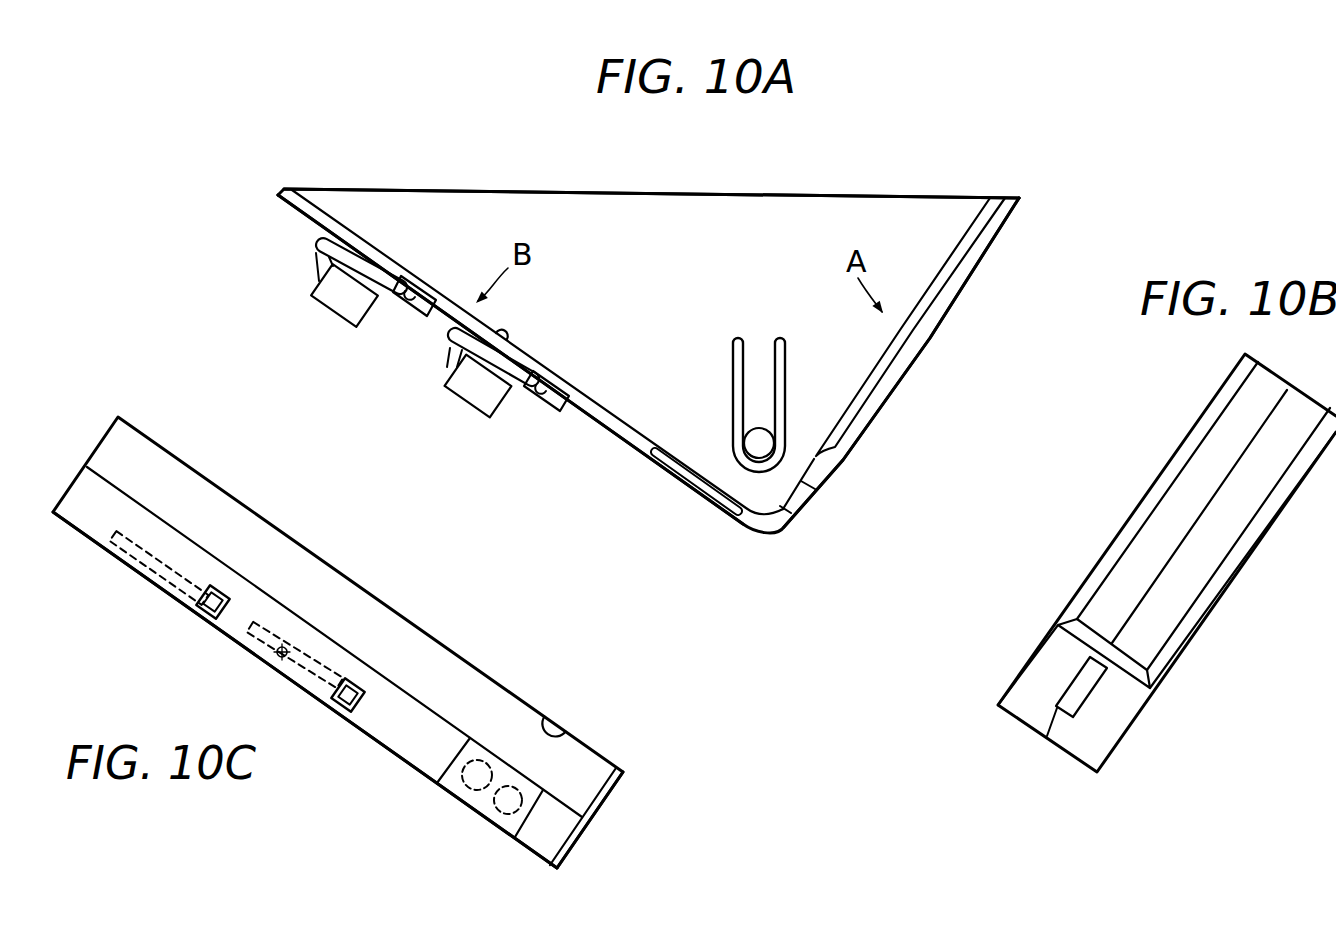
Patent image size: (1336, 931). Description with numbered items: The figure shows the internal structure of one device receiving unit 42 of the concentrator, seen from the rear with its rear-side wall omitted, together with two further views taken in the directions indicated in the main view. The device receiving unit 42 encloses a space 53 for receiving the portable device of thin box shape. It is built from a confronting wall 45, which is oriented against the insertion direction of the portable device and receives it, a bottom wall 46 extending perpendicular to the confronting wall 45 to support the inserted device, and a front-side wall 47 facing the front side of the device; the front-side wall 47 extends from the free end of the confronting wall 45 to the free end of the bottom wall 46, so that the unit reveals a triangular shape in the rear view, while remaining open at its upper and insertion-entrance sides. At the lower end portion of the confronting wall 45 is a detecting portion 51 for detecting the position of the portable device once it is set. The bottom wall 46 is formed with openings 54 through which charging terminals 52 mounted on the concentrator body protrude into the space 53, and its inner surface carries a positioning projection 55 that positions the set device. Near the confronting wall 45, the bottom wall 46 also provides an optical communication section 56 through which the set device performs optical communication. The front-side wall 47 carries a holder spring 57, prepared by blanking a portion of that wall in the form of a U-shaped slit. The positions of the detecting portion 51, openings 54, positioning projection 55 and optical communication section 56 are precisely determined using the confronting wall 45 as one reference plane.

In FIG. 10A, the device receiving unit 42 is at (855, 192).
In FIG. 10B, the device receiving unit 42 is at (1167, 450).
In FIG. 10C, the device receiving unit 42 is at (320, 556).
In FIG. 10A, the confronting wall 45 is at (942, 302).
In FIG. 10B, the confronting wall 45 is at (1197, 583).
In FIG. 10C, the confronting wall 45 is at (603, 797).
In FIG. 10A, the bottom wall 46 is at (305, 212).
In FIG. 10C, the bottom wall 46 is at (417, 763).
In FIG. 10A, the front-side wall 47 is at (613, 207).
In FIG. 10A, the detecting portion 51 is at (807, 488).
In FIG. 10B, the detecting portion 51 is at (1062, 695).
In FIG. 10A, the charging terminals 52 is at (553, 384).
In FIG. 10C, the charging terminals 52 is at (348, 683).
In FIG. 10A, the space 53 is at (668, 309).
In FIG. 10A, the openings 54 is at (421, 279).
In FIG. 10C, the openings 54 is at (222, 617).
In FIG. 10A, the positioning projection 55 is at (503, 320).
In FIG. 10A, the optical communication section 56 is at (678, 481).
In FIG. 10C, the optical communication section 56 is at (493, 770).
In FIG. 10A, the holder spring 57 is at (757, 472).
In FIG. 10C, the holder spring 57 is at (567, 728).